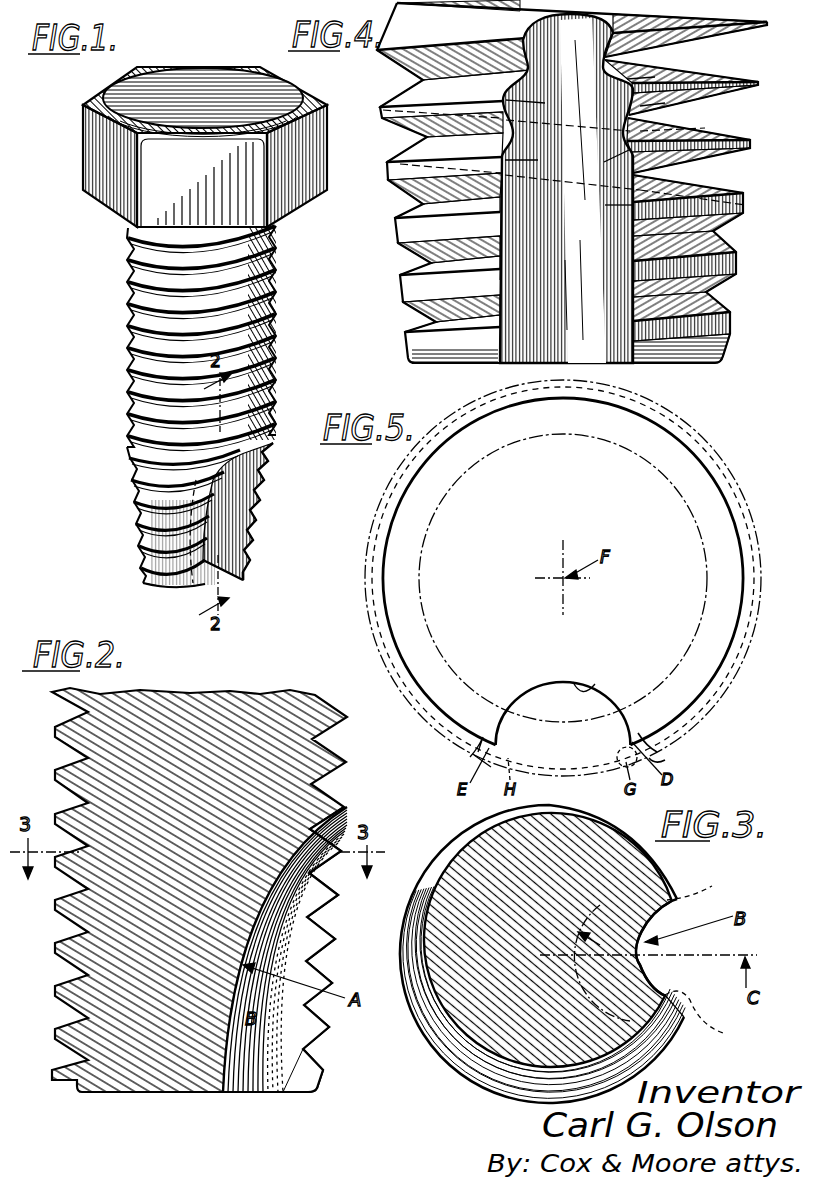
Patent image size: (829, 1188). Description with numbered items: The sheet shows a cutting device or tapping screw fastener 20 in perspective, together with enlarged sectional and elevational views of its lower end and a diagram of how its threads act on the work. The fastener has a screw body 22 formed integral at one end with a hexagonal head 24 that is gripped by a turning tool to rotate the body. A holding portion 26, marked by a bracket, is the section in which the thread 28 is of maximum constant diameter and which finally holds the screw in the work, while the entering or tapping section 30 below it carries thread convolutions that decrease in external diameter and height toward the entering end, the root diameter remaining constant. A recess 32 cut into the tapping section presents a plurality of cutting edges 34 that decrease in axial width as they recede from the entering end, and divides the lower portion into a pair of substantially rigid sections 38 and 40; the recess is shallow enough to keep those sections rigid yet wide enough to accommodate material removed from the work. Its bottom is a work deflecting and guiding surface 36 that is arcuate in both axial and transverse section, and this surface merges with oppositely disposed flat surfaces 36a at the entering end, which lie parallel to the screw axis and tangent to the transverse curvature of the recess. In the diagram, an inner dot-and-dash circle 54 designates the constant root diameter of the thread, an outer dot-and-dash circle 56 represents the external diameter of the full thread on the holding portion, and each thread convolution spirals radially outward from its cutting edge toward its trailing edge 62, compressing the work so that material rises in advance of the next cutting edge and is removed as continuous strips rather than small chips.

In FIG. 1, the cutting device or tapping screw fastener 20 is at (181, 344).
In FIG. 1, the screw body 22 is at (185, 424).
In FIG. 3, the screw body 22 is at (457, 1077).
In FIG. 1, the head 24 is at (305, 202).
In FIG. 1, the holding portion 26 is at (196, 338).
In FIG. 1, the thread 28 is at (278, 293).
In FIG. 4, the thread 28 is at (748, 32).
In FIG. 1, the entering or tapping section 30 is at (185, 530).
In FIG. 4, the entering or tapping section 30 is at (380, 355).
In FIG. 1, the recess 32 is at (203, 565).
In FIG. 4, the recess 32 is at (531, 353).
In FIG. 5, the recess 32 is at (567, 749).
In FIG. 2, the recess 32 is at (287, 1066).
In FIG. 3, the recess 32 is at (662, 992).
In FIG. 1, the cutting edges 34 is at (261, 505).
In FIG. 4, the cutting edges 34 is at (636, 152).
In FIG. 2, the cutting edges 34 is at (341, 899).
In FIG. 5, the bottom or work deflecting and guiding surface 36 is at (586, 684).
In FIG. 2, the bottom or work deflecting and guiding surface 36 is at (269, 903).
In FIG. 3, the bottom or work deflecting and guiding surface 36 is at (648, 976).
In FIG. 2, the flat surfaces 36a is at (307, 1071).
In FIG. 3, the flat surfaces 36a is at (721, 954).
In FIG. 1, the section 38 is at (186, 587).
In FIG. 4, the section 38 is at (432, 357).
In FIG. 5, the section 38 is at (481, 745).
In FIG. 3, the section 38 is at (661, 1022).
In FIG. 1, the section 40 is at (245, 580).
In FIG. 4, the section 40 is at (665, 343).
In FIG. 5, the section 40 is at (660, 746).
In FIG. 3, the section 40 is at (669, 899).
In FIG. 5, the inner dot-and-dash circle 54 is at (652, 464).
In FIG. 5, the outer dot-and-dash circle 56 is at (729, 464).
In FIG. 4, the trailing edge 62 is at (505, 270).